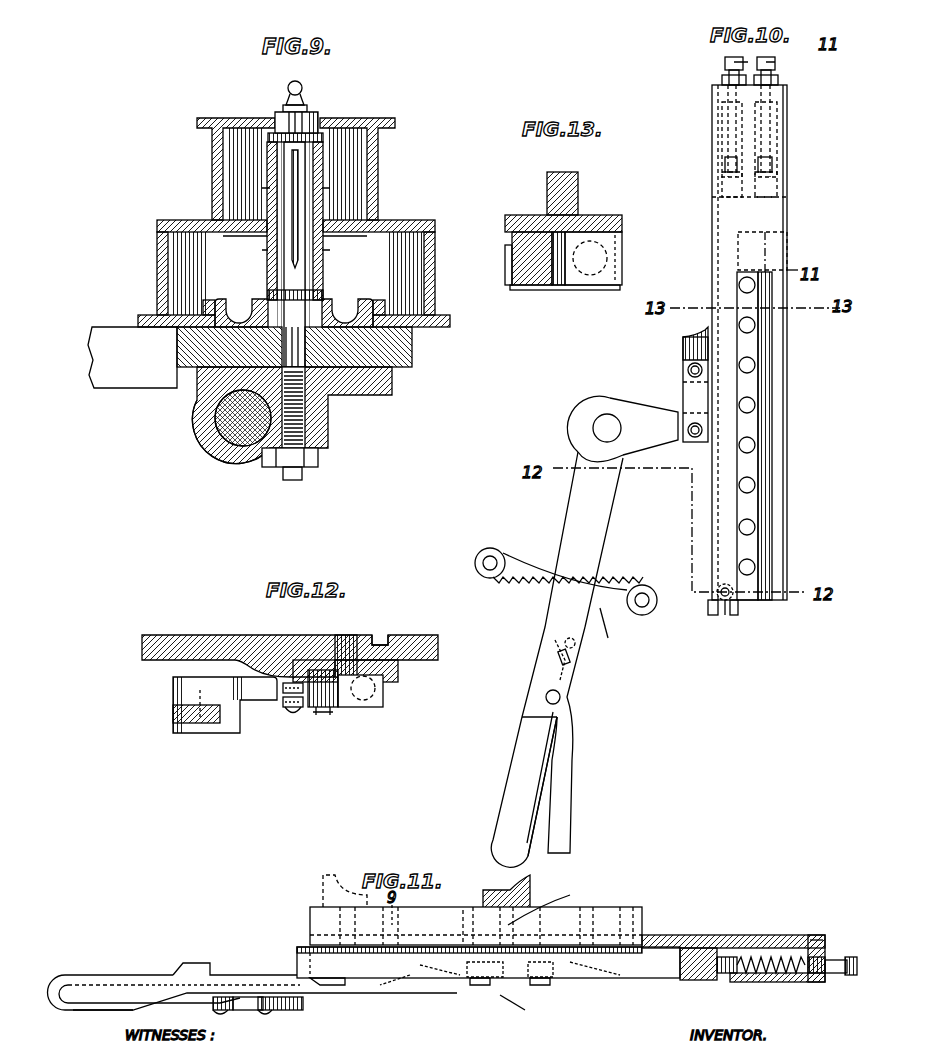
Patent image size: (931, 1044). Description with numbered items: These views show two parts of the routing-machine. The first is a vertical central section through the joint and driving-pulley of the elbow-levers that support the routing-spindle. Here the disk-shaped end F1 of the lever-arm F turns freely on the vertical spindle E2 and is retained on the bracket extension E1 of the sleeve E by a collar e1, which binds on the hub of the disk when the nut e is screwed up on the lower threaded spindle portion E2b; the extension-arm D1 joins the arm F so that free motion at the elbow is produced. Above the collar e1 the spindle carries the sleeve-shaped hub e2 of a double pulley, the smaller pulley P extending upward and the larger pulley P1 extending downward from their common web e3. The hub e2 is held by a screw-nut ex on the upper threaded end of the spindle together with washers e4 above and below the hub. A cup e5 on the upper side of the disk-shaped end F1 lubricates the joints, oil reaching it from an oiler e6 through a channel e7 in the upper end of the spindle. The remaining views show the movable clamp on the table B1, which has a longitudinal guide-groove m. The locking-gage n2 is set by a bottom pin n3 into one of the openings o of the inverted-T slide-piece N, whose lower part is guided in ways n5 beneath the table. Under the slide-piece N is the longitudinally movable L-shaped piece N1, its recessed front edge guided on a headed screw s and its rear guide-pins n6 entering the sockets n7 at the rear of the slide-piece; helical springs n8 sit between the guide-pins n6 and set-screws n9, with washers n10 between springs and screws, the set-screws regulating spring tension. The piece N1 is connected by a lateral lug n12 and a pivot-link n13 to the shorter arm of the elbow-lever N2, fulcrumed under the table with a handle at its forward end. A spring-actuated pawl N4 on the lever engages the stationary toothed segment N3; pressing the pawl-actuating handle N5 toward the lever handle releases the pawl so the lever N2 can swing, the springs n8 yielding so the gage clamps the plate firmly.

In FIG. 9, the small pulley P is at (212, 172).
In FIG. 9, the large pulley P1 is at (157, 277).
In FIG. 9, the vertical spindle E2 is at (305, 274).
In FIG. 9, the vertical spindle E2b is at (293, 420).
In FIG. 9, the channel e7 is at (298, 208).
In FIG. 9, the washers e4 is at (280, 136).
In FIG. 9, the oiler e6 is at (300, 84).
In FIG. 9, the screw-nut ex is at (315, 118).
In FIG. 9, the sleeve-shaped hub e2 is at (267, 188).
In FIG. 9, the web e3 is at (230, 232).
In FIG. 9, the cup e5 is at (203, 306).
In FIG. 9, the collar e1 is at (283, 313).
In FIG. 9, the disk-shaped end F1 is at (177, 350).
In FIG. 9, the lever-arm F is at (132, 357).
In FIG. 9, the bracket extension E1 is at (318, 412).
In FIG. 9, the sleeve E is at (206, 444).
In FIG. 9, the extension-arm D1 is at (238, 418).
In FIG. 9, the nut e is at (305, 460).
In FIG. 13, the slide-piece N is at (572, 190).
In FIG. 10, the slide-piece N is at (712, 112).
In FIG. 12, the slide-piece N is at (350, 636).
In FIG. 11, the slide-piece N is at (340, 922).
In FIG. 13, the L-shaped piece N1 is at (512, 282).
In FIG. 10, the L-shaped piece N1 is at (708, 610).
In FIG. 12, the L-shaped piece N1 is at (345, 707).
In FIG. 11, the L-shaped piece N1 is at (392, 965).
In FIG. 10, the elbow-lever N2 is at (498, 760).
In FIG. 12, the elbow-lever N2 is at (173, 715).
In FIG. 11, the elbow-lever N2 is at (490, 990).
In FIG. 10, the toothed segment N3 is at (566, 607).
In FIG. 11, the toothed segment N3 is at (290, 1012).
In FIG. 10, the pawl N4 is at (562, 640).
In FIG. 11, the pawl N4 is at (238, 1010).
In FIG. 10, the pawl-actuating handle N5 is at (568, 755).
In FIG. 11, the pawl-actuating handle N5 is at (110, 998).
In FIG. 11, the second gage n2 is at (505, 891).
In FIG. 11, the bottom pin n3 is at (550, 904).
In FIG. 12, the ways n5 is at (293, 668).
In FIG. 13, the guide-pins n6 is at (593, 256).
In FIG. 10, the guide-pins n6 is at (735, 186).
In FIG. 12, the guide-pins n6 is at (366, 698).
In FIG. 11, the guide-pins n6 is at (722, 980).
In FIG. 13, the sockets n7 is at (588, 288).
In FIG. 10, the sockets n7 is at (720, 140).
In FIG. 11, the sockets n7 is at (742, 978).
In FIG. 11, the helical springs n8 is at (775, 978).
In FIG. 10, the set-screws n9 is at (770, 52).
In FIG. 11, the set-screws n9 is at (843, 960).
In FIG. 10, the washers n10 is at (730, 105).
In FIG. 11, the washers n10 is at (805, 935).
In FIG. 10, the lug n12 is at (684, 338).
In FIG. 10, the pivot-link n13 is at (698, 398).
In FIG. 12, the pivot-link n13 is at (290, 712).
In FIG. 11, the pivot-link n13 is at (530, 1008).
In FIG. 10, the openings o is at (752, 366).
In FIG. 11, the openings o is at (627, 915).
In FIG. 10, the headed screw s is at (724, 605).
In FIG. 12, the headed screw s is at (318, 714).
In FIG. 12, the table B1 is at (142, 645).
In FIG. 12, the guide-groove m is at (382, 640).